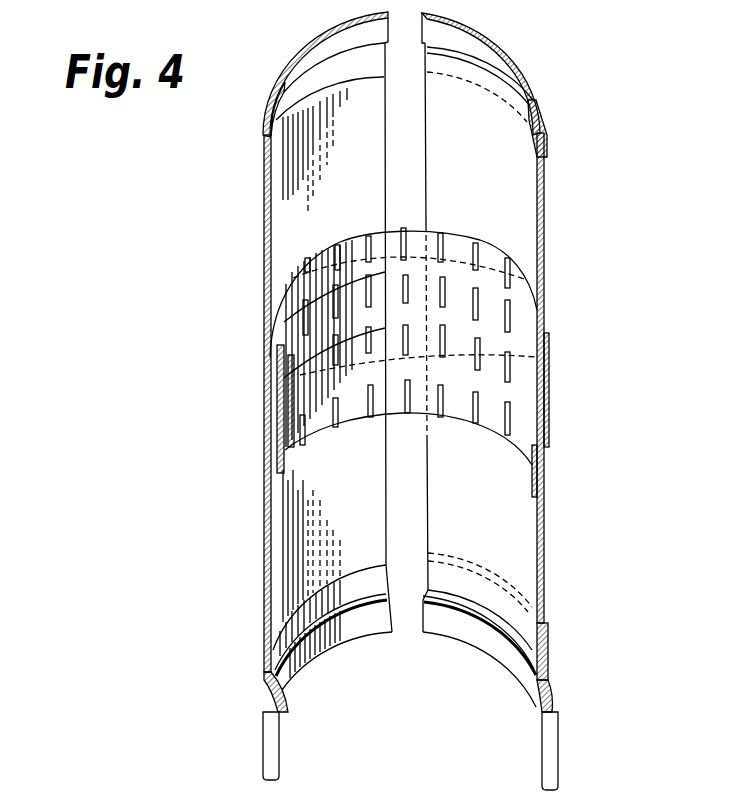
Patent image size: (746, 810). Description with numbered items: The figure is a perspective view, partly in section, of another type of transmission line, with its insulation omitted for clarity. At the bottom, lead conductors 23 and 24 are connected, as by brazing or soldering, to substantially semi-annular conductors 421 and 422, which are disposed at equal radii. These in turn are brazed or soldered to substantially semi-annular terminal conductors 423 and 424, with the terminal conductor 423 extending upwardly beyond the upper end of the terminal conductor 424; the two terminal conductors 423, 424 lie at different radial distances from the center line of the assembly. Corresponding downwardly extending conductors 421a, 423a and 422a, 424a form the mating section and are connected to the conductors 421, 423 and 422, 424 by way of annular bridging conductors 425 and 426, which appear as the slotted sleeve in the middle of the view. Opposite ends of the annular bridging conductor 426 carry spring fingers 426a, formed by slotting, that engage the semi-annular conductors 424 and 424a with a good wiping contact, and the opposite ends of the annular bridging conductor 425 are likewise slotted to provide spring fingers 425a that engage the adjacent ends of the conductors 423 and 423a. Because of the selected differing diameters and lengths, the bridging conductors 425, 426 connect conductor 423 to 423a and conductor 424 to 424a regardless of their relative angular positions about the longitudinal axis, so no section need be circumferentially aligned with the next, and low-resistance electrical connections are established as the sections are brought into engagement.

The conductor 23 is at (271, 703).
The conductor 24 is at (553, 707).
The semi-annular conductor 421 is at (271, 671).
The downwardly extending conductor 421a is at (289, 66).
The semi-annular conductor 422 is at (546, 673).
The downwardly extending conductor 422a is at (532, 73).
The semi-annular terminal conductor 423 is at (268, 580).
The downwardly extending conductor 423a is at (263, 222).
The semi-annular terminal conductor 424 is at (544, 580).
The downwardly extending conductor 424a is at (544, 227).
The annular bridging conductor 425 is at (278, 403).
The spring fingers 425a is at (540, 355).
The annular bridging conductor 426 is at (505, 249).
The spring fingers 426a is at (362, 250).